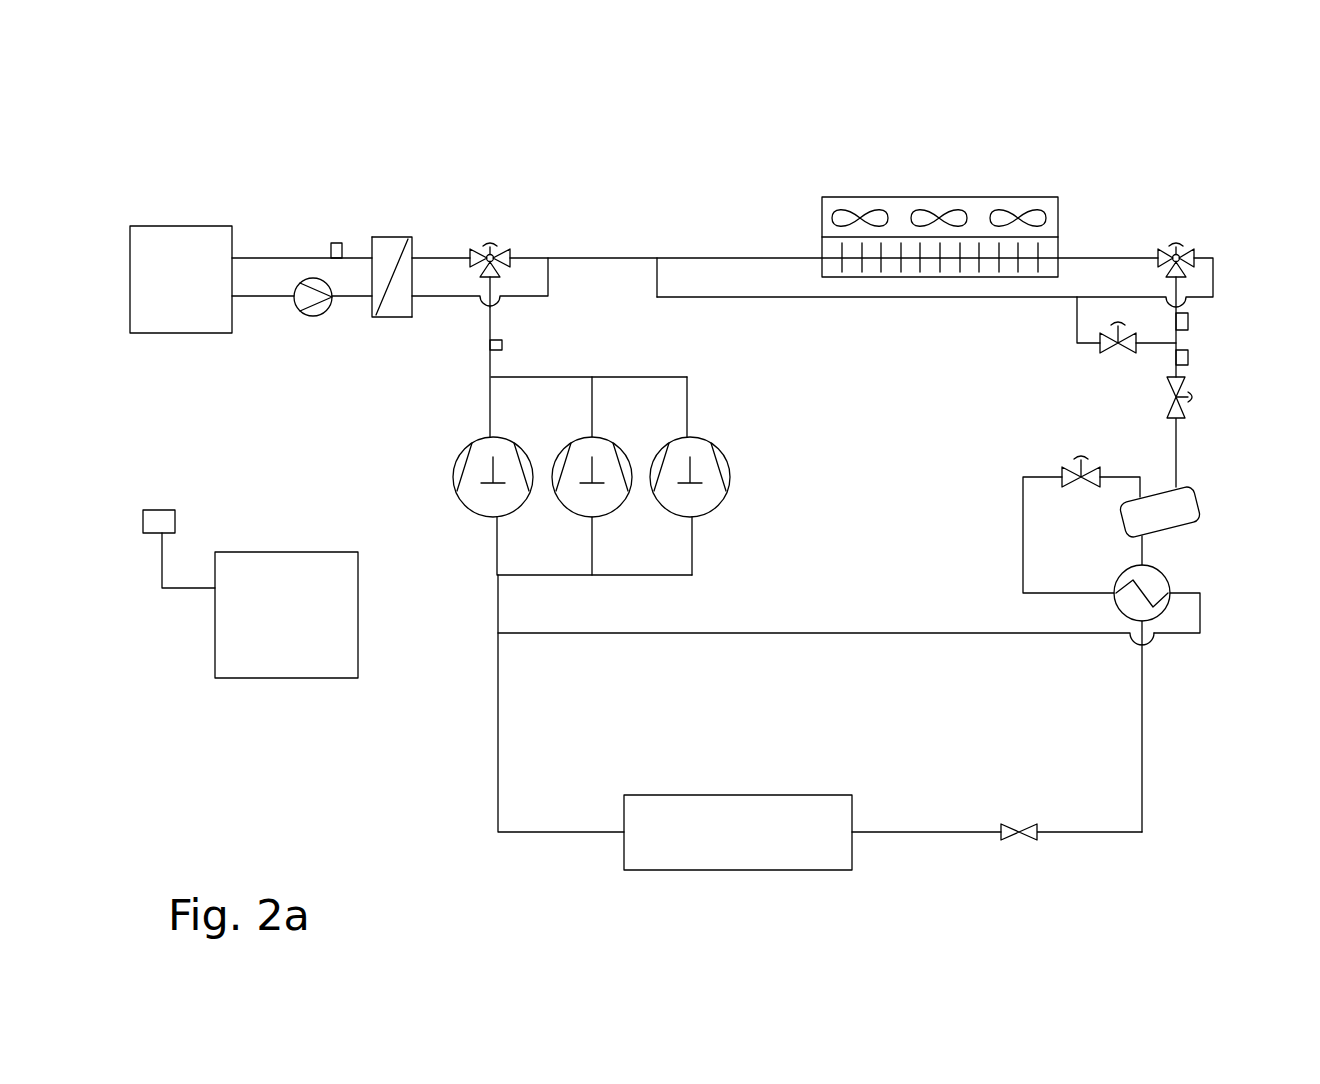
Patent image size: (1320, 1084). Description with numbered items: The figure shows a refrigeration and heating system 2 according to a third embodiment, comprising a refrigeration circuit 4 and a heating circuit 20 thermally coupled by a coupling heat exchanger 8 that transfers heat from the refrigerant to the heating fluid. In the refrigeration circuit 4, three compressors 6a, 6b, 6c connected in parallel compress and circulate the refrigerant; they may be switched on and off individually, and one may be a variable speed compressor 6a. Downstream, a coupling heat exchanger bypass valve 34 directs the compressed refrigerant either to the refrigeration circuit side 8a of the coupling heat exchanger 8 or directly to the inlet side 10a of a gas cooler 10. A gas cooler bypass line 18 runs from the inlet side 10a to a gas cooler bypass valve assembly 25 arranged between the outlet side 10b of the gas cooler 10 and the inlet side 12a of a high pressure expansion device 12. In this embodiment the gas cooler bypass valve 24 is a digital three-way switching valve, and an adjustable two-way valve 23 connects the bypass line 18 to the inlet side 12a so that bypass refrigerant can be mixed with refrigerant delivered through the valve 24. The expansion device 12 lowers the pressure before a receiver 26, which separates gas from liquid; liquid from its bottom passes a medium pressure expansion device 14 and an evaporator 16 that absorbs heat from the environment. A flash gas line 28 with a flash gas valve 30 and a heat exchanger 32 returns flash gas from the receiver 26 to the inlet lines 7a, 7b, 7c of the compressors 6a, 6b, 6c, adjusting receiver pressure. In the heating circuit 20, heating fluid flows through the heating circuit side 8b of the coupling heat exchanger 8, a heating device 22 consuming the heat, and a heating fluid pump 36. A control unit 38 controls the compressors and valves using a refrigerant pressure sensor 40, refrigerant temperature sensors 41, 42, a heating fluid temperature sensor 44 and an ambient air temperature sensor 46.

The refrigeration and heating system 2 is at (1203, 117).
The refrigeration circuit 4 is at (738, 208).
The compressor 6a is at (478, 498).
The compressor 6b is at (604, 500).
The compressor 6c is at (710, 496).
The inlet line 7a is at (499, 532).
The inlet line 7b is at (592, 548).
The inlet line 7c is at (694, 560).
The coupling heat exchanger 8 is at (418, 219).
The refrigeration circuit side of the coupling heat exchanger 8a is at (402, 305).
The heating circuit side of the coupling heat exchanger 8b is at (381, 245).
The gas cooler 10 is at (1008, 188).
The inlet side of the gas cooler 10a is at (806, 243).
The outlet side of the gas cooler 10b is at (1072, 243).
The high pressure expansion device 12 is at (1202, 381).
The inlet side of the high pressure expansion device 12a is at (1170, 364).
The medium pressure expansion device 14 is at (1019, 847).
The evaporator 16 is at (750, 848).
The gas cooler bypass line 18 is at (916, 298).
The heating circuit 20 is at (265, 365).
The heating device 22 is at (193, 246).
The adjustable two-way valve 23 is at (1115, 356).
The gas cooler bypass valve 24 is at (1196, 236).
The gas cooler bypass valve assembly 25 is at (1134, 215).
The receiver 26 is at (1186, 503).
The flash gas line 28 is at (849, 635).
The flash gas valve 30 is at (1079, 488).
The heat exchanger 32 is at (1170, 573).
The coupling heat exchanger bypass valve 34 is at (505, 234).
The heating fluid pump 36 is at (312, 318).
The control unit 38 is at (322, 565).
The refrigerant pressure sensor 40 is at (1190, 318).
The refrigerant temperature sensor 41 is at (1190, 356).
The refrigerant temperature sensor 42 is at (503, 345).
The heating fluid temperature sensor 44 is at (336, 243).
The ambient air temperature sensor 46 is at (158, 512).